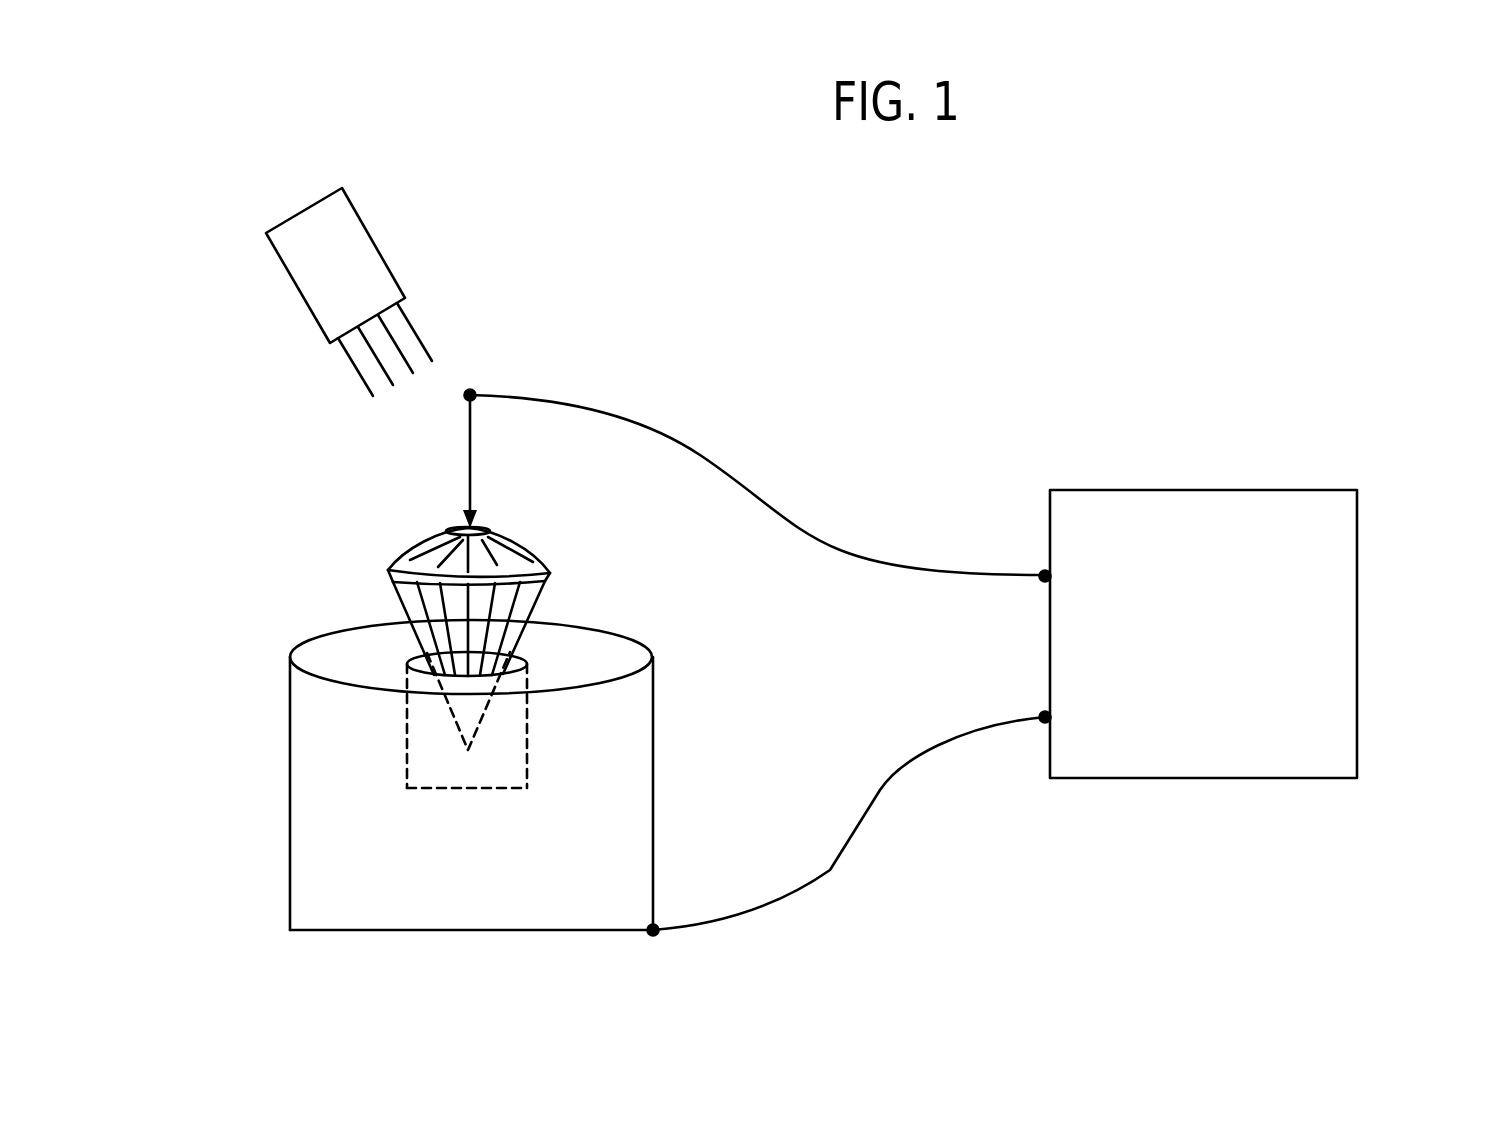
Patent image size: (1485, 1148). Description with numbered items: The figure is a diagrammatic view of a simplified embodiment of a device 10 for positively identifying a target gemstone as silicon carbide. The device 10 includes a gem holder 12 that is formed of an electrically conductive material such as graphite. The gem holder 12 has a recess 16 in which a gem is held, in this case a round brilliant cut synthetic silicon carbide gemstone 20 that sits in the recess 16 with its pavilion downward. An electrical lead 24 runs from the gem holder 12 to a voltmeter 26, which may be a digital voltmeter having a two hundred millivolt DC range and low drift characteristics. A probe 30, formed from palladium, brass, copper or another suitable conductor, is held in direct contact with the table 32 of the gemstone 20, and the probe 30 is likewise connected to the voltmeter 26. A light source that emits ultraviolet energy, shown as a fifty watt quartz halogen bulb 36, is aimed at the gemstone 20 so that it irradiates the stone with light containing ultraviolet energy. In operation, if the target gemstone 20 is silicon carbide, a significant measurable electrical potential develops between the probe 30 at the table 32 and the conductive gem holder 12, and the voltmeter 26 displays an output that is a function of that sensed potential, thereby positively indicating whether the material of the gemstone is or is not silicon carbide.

The device 10 is at (1150, 404).
The gem holder 12 is at (291, 810).
The recess 16 is at (527, 713).
The gemstone 20 is at (398, 595).
The electrical lead 24 is at (858, 842).
The voltmeter 26 is at (1357, 515).
The probe 30 is at (468, 452).
The table 32 is at (485, 528).
The quartz halogen bulb 36 is at (378, 248).